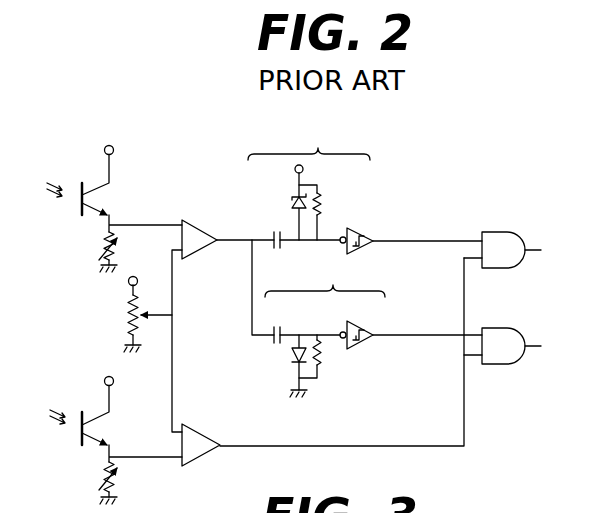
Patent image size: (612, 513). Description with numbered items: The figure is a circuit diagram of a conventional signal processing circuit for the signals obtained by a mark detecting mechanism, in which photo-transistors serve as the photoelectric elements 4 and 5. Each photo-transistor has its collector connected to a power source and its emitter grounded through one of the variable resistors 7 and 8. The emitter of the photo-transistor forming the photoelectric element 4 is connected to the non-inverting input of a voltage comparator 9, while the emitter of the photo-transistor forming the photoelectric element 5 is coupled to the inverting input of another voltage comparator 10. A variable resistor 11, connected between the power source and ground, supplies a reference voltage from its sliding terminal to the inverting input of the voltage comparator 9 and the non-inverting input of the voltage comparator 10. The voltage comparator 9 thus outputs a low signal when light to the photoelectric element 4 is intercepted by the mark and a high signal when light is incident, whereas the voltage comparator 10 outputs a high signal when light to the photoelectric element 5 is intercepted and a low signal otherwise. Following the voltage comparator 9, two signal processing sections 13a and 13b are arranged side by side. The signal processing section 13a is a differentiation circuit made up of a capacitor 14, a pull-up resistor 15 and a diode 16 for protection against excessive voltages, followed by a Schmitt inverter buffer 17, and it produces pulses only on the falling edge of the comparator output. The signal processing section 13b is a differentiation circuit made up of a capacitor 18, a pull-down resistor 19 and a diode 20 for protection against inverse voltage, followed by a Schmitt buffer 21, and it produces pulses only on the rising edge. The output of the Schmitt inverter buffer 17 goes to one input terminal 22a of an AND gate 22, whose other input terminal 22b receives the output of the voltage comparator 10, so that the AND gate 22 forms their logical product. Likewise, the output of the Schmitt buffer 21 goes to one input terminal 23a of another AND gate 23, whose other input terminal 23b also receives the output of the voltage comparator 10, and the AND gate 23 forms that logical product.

The photoelectric element 4 is at (97, 183).
The photoelectric element 5 is at (97, 412).
The variable resistor 7 is at (100, 240).
The variable resistor 8 is at (100, 478).
The voltage comparator 9 is at (208, 225).
The voltage comparator 10 is at (205, 438).
The variable resistor 11 is at (128, 316).
The signal processing section 13a is at (309, 141).
The signal processing section 13b is at (325, 278).
The capacitor 14 is at (272, 235).
The pull-up resistor 15 is at (322, 206).
The diode 16 is at (293, 197).
The Schmitt inverter buffer 17 is at (366, 229).
The capacitor 18 is at (273, 340).
The pull-down resistor 19 is at (325, 362).
The diode 20 is at (292, 354).
The Schmitt buffer 21 is at (366, 336).
The AND gate 22 is at (505, 231).
The input terminal 22a is at (427, 230).
The input terminal 22b is at (459, 261).
The AND gate 23 is at (506, 338).
The input terminal 23a is at (427, 322).
The input terminal 23b is at (453, 357).